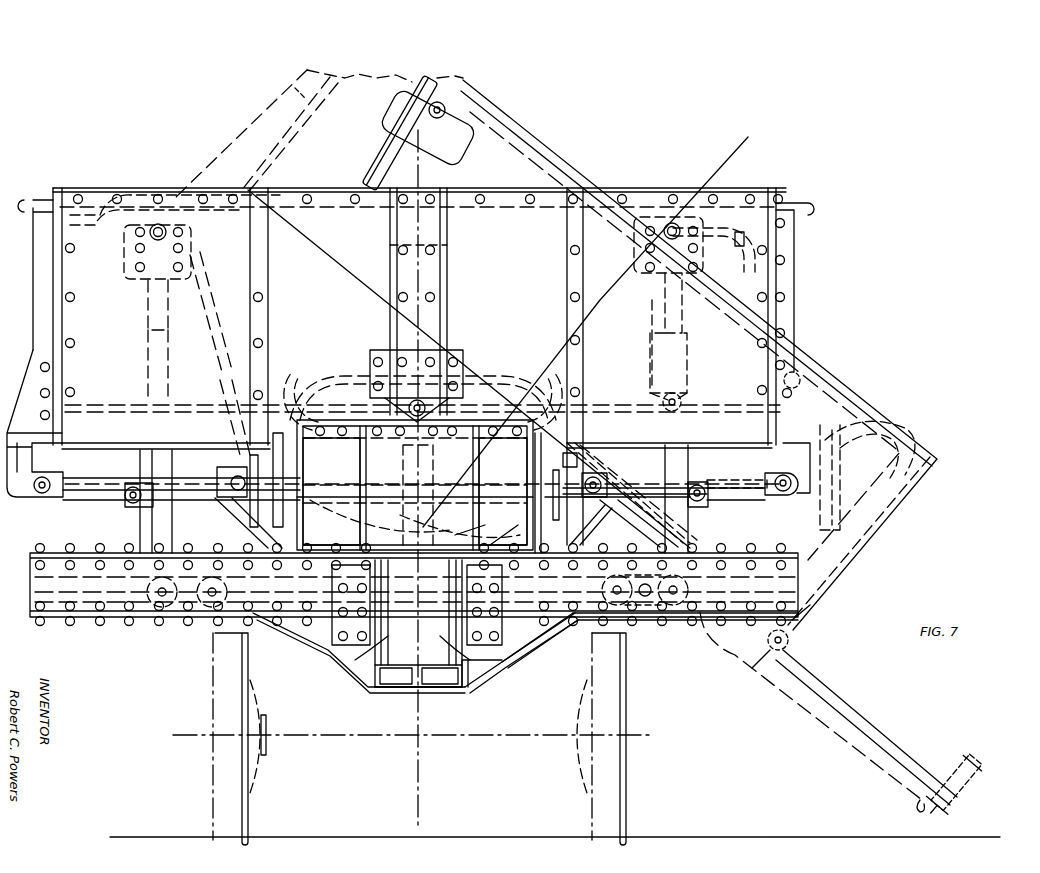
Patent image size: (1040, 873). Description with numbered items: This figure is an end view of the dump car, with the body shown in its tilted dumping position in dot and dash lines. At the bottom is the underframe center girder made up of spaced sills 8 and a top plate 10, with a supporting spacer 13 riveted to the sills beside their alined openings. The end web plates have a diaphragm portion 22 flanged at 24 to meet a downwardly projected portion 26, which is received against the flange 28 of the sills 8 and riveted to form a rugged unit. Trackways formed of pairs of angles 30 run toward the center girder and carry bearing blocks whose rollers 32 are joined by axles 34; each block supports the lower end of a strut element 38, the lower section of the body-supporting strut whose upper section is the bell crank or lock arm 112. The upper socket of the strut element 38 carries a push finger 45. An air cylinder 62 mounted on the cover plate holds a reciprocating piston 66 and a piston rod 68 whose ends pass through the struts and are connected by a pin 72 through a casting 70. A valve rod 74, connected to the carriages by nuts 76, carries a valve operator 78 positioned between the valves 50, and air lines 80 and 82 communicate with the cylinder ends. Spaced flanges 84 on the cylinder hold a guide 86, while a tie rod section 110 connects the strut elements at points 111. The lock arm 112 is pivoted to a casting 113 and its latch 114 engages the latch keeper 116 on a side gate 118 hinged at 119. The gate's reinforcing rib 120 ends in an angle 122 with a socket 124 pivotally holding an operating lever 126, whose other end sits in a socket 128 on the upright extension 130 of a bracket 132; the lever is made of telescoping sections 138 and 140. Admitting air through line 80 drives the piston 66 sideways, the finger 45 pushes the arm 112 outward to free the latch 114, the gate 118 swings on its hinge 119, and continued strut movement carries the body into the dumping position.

The spaced sills 8 is at (412, 647).
The top plate 10 is at (412, 610).
The supporting spacer 13 is at (440, 580).
The diaphragm portion 22 is at (520, 630).
The flange 24 is at (548, 628).
The downwardly projected portion 26 is at (575, 625).
The flange of the sills 28 is at (470, 685).
The angles 30 is at (490, 668).
The rollers 32 is at (640, 605).
The axles 34 is at (672, 605).
The strut element 38 is at (672, 458).
The push finger 45 is at (650, 300).
The valves 50 is at (470, 584).
The air cylinder 62 is at (331, 491).
The reciprocating piston 66 is at (432, 478).
The piston rod 68 is at (645, 488).
The casting 70 is at (722, 498).
The pin 72 is at (700, 502).
The valve rod 74 is at (418, 580).
The nuts 76 is at (790, 578).
The valve operator 78 is at (425, 670).
The air line 80 is at (590, 470).
The air line 82 is at (660, 283).
The spaced flanges 84 is at (305, 380).
The guide 86 is at (348, 362).
The tie rod section 110 is at (636, 405).
The connecting points 111 is at (684, 398).
The bell crank or lock arm 112 is at (860, 478).
The casting 113 is at (645, 260).
The latch 114 is at (898, 408).
The latch keeper 116 is at (950, 750).
The side gate 118 is at (860, 700).
The hinge 119 is at (805, 638).
The reinforcing rib 120 is at (860, 752).
The angle 122 is at (800, 497).
The socket 124 is at (772, 468).
The operating lever 126 is at (735, 478).
The socket 128 is at (600, 460).
The upright extension 130 is at (520, 488).
The bracket 132 is at (512, 548).
The telescoping section 138 is at (215, 268).
The telescoping section 140 is at (240, 420).